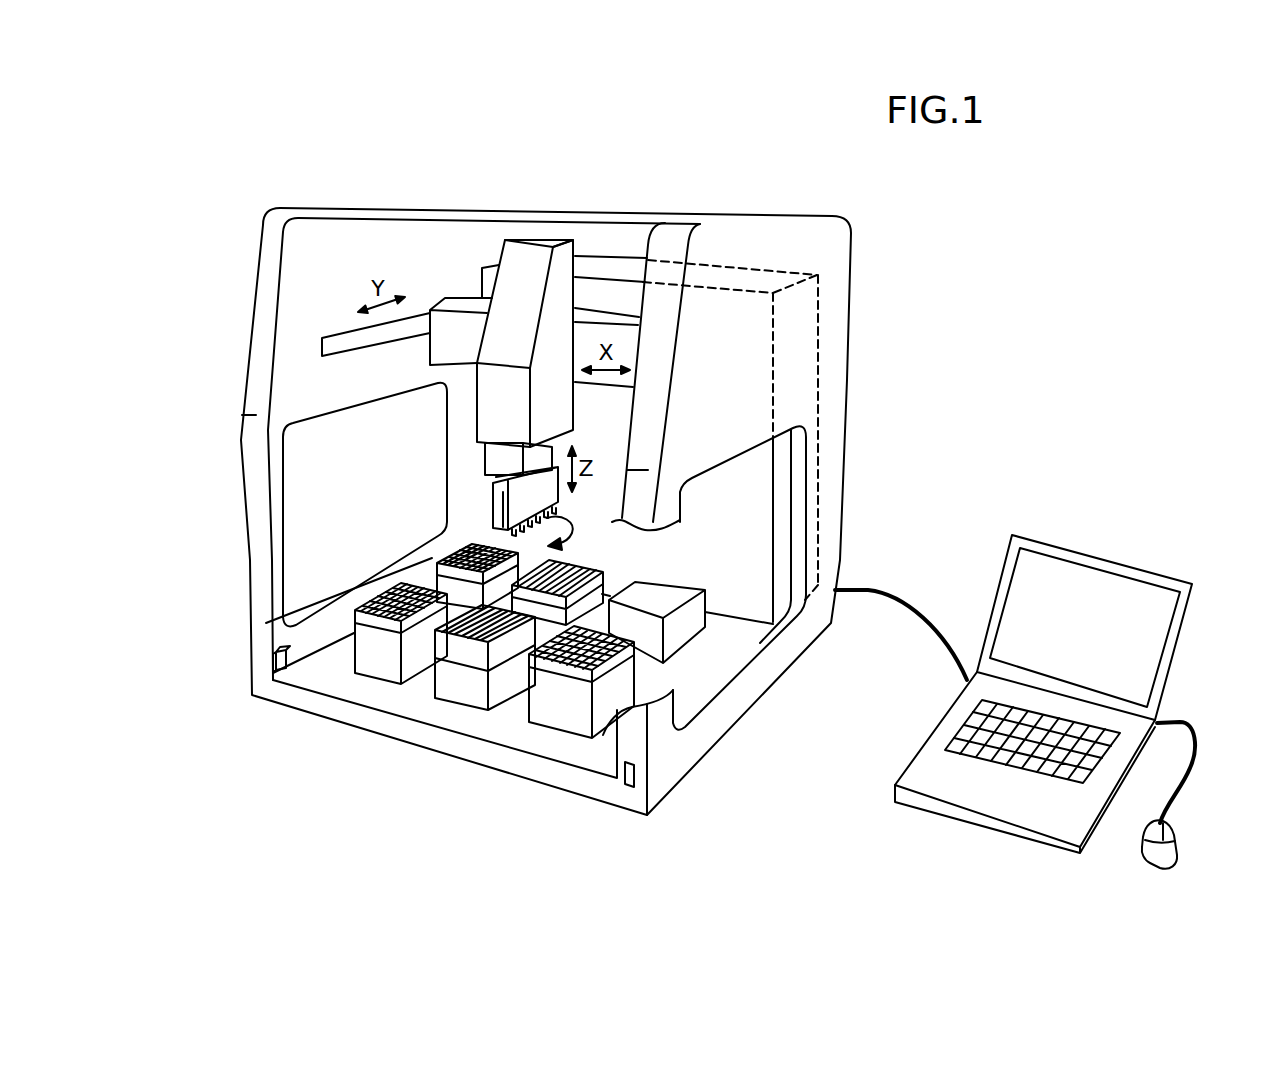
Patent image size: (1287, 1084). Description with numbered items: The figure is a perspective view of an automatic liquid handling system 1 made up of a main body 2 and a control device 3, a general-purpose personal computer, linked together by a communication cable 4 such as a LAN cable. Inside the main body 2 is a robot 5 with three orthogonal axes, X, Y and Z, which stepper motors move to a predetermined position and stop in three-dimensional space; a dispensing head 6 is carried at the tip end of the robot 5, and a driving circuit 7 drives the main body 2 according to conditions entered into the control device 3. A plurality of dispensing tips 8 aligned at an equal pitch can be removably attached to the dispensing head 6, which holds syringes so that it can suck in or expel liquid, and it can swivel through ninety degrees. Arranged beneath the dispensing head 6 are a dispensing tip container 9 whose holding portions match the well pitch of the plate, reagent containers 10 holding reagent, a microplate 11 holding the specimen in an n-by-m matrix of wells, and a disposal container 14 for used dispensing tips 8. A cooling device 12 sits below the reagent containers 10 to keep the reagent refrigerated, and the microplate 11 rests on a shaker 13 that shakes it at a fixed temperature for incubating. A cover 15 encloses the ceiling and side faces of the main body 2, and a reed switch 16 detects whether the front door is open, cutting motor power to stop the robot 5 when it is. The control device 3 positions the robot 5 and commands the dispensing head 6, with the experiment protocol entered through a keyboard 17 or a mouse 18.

The automatic liquid handling system 1 is at (406, 113).
The main body 2 is at (277, 217).
The control device 3 is at (1043, 696).
The communication cable 4 is at (900, 587).
The robot 5 is at (525, 257).
The dispensing head 6 is at (495, 498).
The driving circuit 7 is at (782, 280).
The dispensing tips 8 is at (395, 596).
The dispensing tip container 9 is at (377, 622).
The reagent containers 10 is at (437, 650).
The microplate 11 is at (553, 665).
The cooling device 12 is at (457, 690).
The shaker 13 is at (565, 717).
The disposal container 14 is at (683, 628).
The cover 15 is at (658, 215).
The reed switch 16 is at (273, 655).
The keyboard 17 is at (988, 752).
The mouse 18 is at (1170, 852).